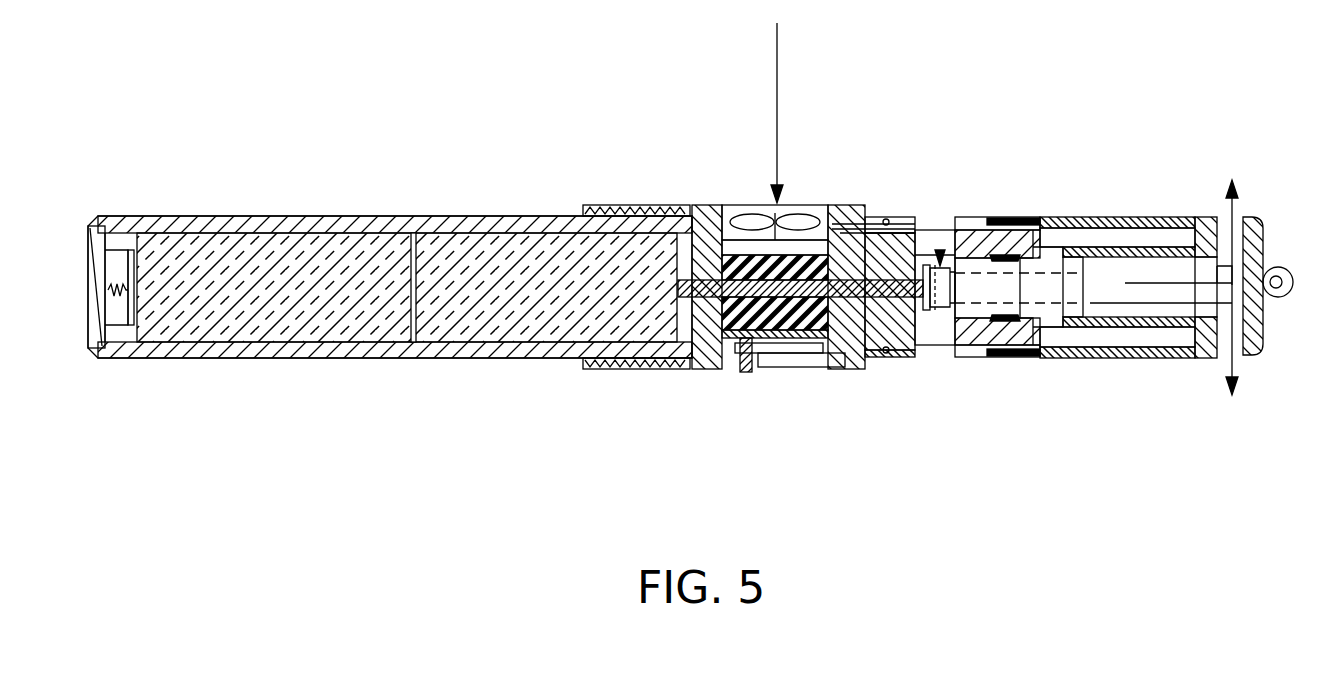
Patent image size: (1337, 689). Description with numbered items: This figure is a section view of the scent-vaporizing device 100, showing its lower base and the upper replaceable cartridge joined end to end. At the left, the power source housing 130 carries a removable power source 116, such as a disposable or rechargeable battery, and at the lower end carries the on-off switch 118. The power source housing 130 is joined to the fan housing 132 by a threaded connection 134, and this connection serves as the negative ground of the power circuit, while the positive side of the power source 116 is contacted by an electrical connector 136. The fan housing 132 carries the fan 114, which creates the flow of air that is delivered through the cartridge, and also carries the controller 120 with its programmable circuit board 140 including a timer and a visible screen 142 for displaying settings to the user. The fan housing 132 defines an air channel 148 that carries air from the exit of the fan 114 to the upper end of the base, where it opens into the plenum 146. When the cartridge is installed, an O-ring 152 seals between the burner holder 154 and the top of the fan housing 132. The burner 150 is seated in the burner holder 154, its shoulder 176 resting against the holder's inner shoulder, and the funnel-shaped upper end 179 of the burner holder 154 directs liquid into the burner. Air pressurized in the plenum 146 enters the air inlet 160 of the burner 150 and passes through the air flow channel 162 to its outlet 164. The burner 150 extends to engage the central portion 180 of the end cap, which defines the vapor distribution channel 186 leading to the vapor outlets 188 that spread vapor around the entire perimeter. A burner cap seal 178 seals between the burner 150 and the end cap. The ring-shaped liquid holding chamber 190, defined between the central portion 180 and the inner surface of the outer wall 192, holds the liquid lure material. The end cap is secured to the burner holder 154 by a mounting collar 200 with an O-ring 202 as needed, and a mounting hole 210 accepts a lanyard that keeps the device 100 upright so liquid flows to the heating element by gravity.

The device 100 is at (466, 432).
The fan 114 is at (727, 243).
The power source 116 is at (355, 265).
The on-off switch 118 is at (86, 265).
The controller 120 is at (742, 372).
The power source housing 130 is at (298, 216).
The fan housing 132 is at (610, 207).
The threaded connection 134 is at (608, 370).
The electrical connector 136 is at (833, 268).
The programmable circuit board 140 is at (770, 352).
The visible screen 142 is at (825, 368).
The plenum 146 is at (940, 252).
The air channel 148 is at (905, 225).
The burner 150 is at (1030, 357).
The O-ring 152 is at (885, 222).
The burner holder 154 is at (946, 238).
The air inlet 160 is at (940, 310).
The air flow channel 162 is at (973, 335).
The outlet 164 is at (1093, 320).
The shoulder 176 is at (1035, 248).
The burner cap seal 178 is at (1140, 232).
The upper end 179 is at (1083, 248).
The central portion 180 is at (1150, 237).
The vapor distribution channel 186 is at (1161, 280).
The vapor outlets 188 is at (1240, 218).
The liquid holding chamber 190 is at (1168, 350).
The outer wall 192 is at (1124, 358).
The mounting collar 200 is at (1015, 358).
The O-ring 202 is at (1022, 252).
The mounting hole 210 is at (1280, 296).